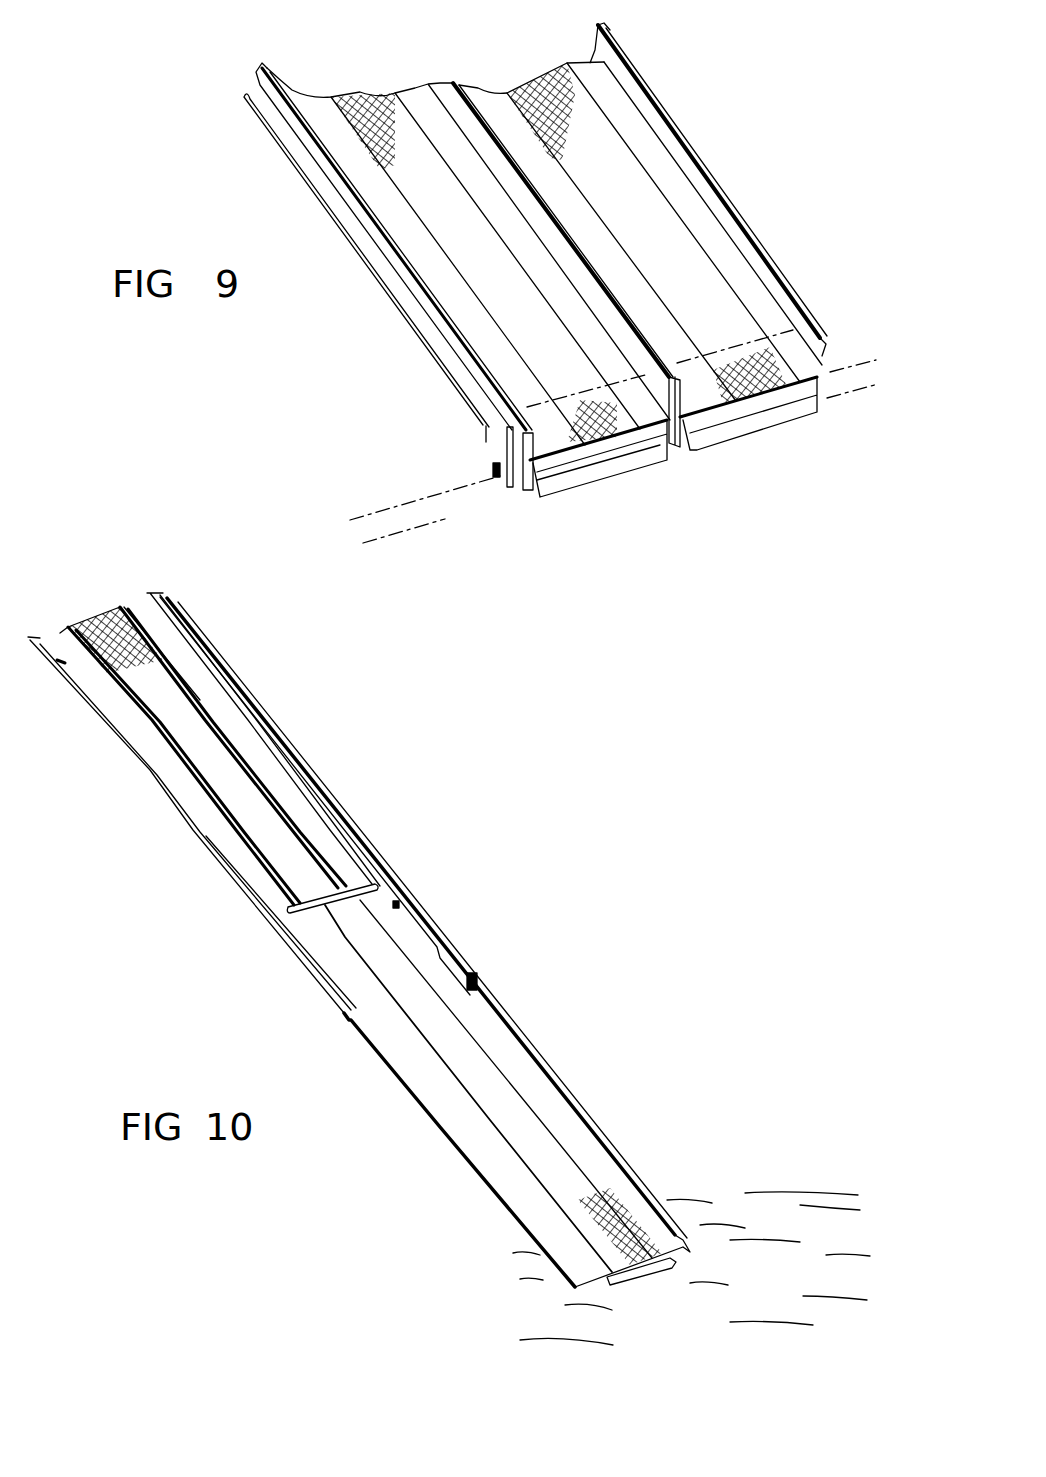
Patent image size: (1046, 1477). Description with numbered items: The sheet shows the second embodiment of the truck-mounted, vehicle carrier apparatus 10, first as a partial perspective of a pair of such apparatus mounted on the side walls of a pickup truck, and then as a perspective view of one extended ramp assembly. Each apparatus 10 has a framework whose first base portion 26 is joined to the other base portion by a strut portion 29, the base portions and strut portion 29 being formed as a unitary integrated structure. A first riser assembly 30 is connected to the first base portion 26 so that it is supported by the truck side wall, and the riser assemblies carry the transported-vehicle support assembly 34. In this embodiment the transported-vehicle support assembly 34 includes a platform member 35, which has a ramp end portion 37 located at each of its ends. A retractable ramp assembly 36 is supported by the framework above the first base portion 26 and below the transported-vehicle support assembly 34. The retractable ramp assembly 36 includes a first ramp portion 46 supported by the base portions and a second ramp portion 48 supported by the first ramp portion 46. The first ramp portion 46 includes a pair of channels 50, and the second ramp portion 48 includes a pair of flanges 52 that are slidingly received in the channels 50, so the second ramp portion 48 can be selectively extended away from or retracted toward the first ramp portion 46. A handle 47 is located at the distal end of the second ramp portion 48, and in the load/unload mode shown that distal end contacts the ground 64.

In FIG. 9, the truck-mounted, vehicle carrier apparatus 10 is at (707, 130).
In FIG. 9, the first base portion 26 is at (473, 420).
In FIG. 9, the strut portion 29 is at (348, 243).
In FIG. 9, the first riser assembly 30 is at (517, 473).
In FIG. 9, the transported-vehicle support assembly 34 is at (647, 87).
In FIG. 9, the platform member 35 is at (397, 173).
In FIG. 9, the retractable ramp assembly 36 is at (607, 440).
In FIG. 10, the retractable ramp assembly 36 is at (396, 874).
In FIG. 9, the ramp end portion 37 is at (537, 480).
In FIG. 10, the first ramp portion 46 is at (283, 780).
In FIG. 10, the handle 47 is at (618, 1283).
In FIG. 10, the second ramp portion 48 is at (560, 1120).
In FIG. 10, the channels 50 is at (40, 637).
In FIG. 10, the flanges 52 is at (512, 1000).
In FIG. 10, the ground 64 is at (795, 1295).